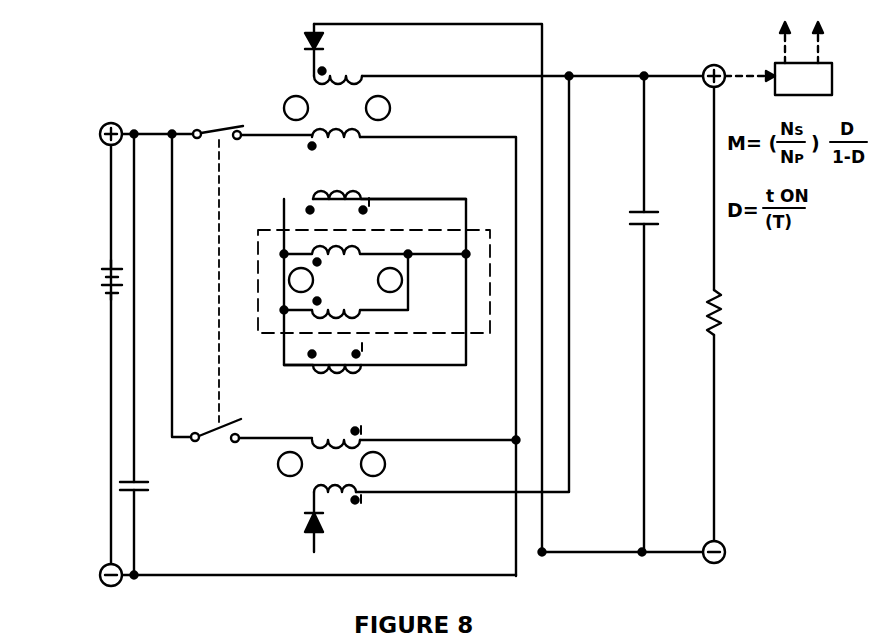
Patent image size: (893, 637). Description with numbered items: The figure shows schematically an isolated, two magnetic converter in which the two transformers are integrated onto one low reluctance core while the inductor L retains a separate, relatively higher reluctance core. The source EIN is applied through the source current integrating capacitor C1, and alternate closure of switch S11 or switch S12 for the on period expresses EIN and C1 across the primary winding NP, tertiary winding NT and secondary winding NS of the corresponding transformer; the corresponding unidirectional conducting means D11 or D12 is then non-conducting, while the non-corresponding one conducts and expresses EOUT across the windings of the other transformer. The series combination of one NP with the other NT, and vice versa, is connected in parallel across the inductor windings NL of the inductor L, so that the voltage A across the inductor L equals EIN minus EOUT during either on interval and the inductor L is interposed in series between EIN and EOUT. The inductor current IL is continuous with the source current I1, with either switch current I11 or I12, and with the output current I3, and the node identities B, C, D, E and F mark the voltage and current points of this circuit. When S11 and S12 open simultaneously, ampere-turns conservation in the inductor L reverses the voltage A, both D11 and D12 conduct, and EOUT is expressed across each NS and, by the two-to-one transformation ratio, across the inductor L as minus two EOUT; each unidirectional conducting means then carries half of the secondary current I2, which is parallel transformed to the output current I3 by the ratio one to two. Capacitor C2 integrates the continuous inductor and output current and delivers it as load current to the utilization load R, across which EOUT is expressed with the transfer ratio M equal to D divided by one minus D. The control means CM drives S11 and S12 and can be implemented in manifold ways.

The switch S11 is at (218, 258).
The switch S12 is at (216, 445).
The unidirectional conducting means D11 is at (297, 45).
The unidirectional conducting means D12 is at (295, 526).
The source current integrating capacitor C1 is at (150, 491).
The capacitor C2 is at (627, 224).
The utilization load R is at (684, 320).
The output voltage EOUT is at (746, 311).
The input voltage source EIN is at (72, 289).
The control means CM is at (795, 58).
The secondary winding NS is at (338, 284).
The primary winding NP is at (335, 288).
The tertiary winding NT is at (375, 282).
The inductor winding NL is at (375, 282).
The inductor L is at (254, 276).
The voltage A is at (301, 280).
The identity B is at (390, 280).
The identity C is at (296, 108).
The identity D is at (378, 108).
The source current E is at (290, 464).
The current F is at (373, 464).
The source current I1 is at (160, 118).
The switch current I11 is at (274, 118).
The switch current I12 is at (296, 430).
The output current I3 is at (621, 85).
The inductor current IL is at (451, 267).
The secondary current I2 is at (427, 32).